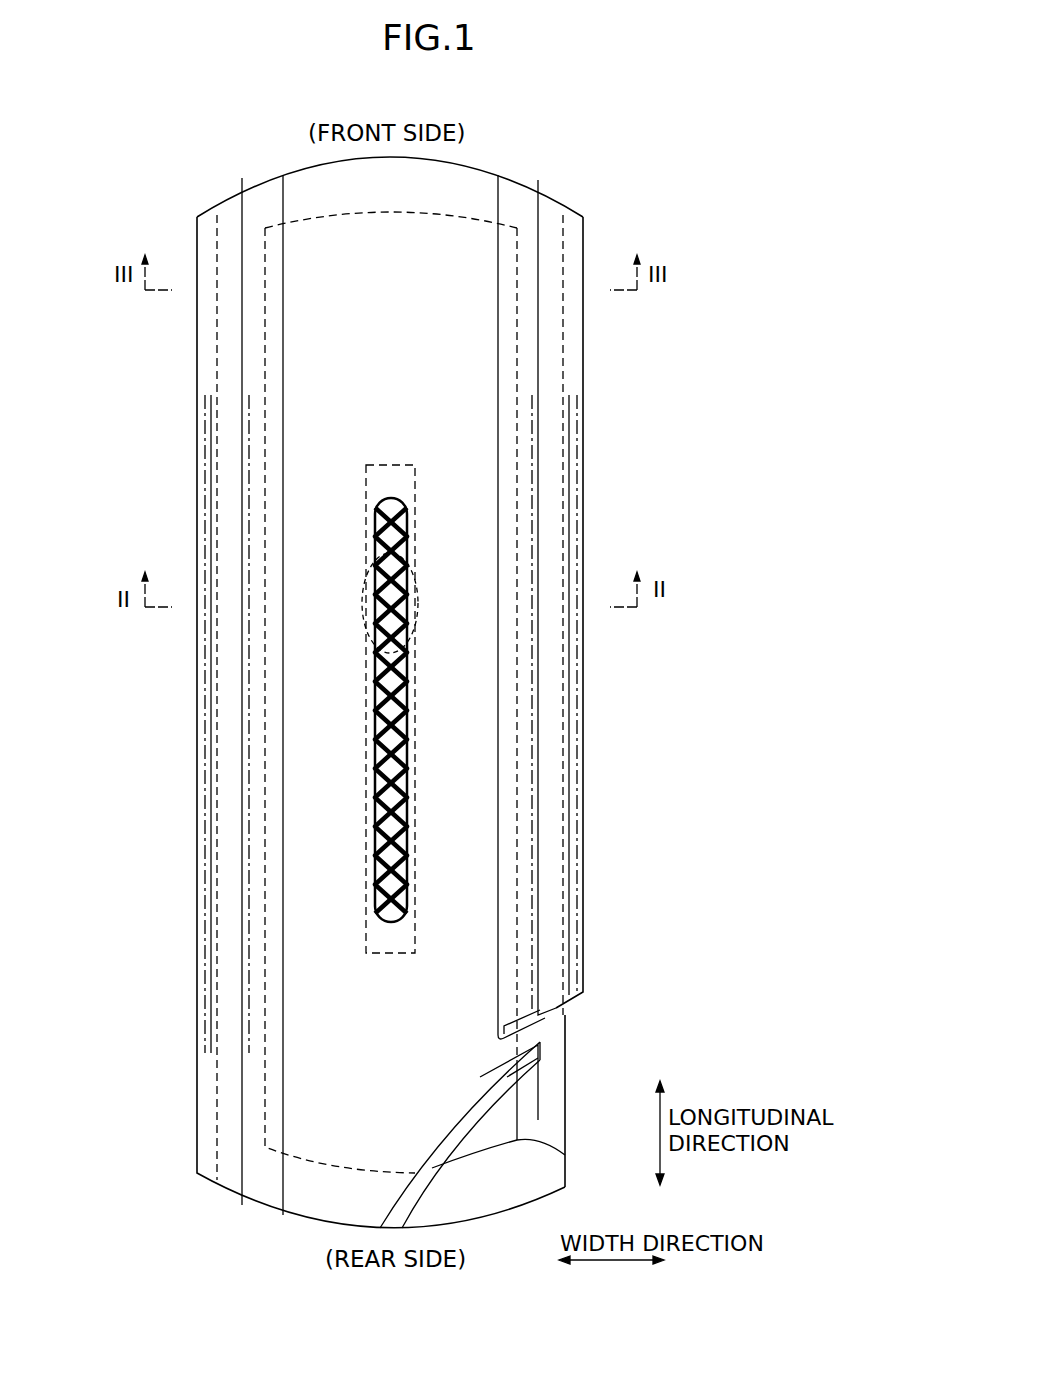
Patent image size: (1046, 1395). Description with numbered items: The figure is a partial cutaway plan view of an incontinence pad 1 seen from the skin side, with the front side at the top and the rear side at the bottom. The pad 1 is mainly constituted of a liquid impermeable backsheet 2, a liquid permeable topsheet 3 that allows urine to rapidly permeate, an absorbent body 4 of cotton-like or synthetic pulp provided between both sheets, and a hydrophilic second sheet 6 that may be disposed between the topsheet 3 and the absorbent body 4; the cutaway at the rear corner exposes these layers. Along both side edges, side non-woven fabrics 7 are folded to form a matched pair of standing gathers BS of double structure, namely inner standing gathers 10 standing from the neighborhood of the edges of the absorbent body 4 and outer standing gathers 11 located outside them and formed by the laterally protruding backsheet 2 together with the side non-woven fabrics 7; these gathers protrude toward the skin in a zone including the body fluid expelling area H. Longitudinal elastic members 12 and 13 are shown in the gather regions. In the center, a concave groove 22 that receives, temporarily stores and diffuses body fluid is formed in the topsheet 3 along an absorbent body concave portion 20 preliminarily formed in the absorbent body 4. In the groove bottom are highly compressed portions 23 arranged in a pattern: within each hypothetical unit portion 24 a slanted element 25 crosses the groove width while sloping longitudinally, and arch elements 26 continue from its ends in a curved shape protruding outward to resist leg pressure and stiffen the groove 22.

The incontinence pad 1 is at (605, 195).
The liquid impermeable backsheet 2 is at (538, 1120).
The liquid permeable topsheet 3 is at (387, 1157).
The absorbent body 4 is at (498, 1132).
The hydrophilic second sheet 6 is at (432, 1168).
The side non-woven fabric 7 is at (210, 1140).
The inner standing gather 10 is at (246, 518).
The outer standing gather 11 is at (197, 522).
The elastic member 12 is at (245, 690).
The elastic member 13 is at (211, 690).
The absorbent body concave portion 20 is at (418, 670).
The concave groove 22 is at (378, 918).
The highly compressed portion 23 is at (405, 540).
The hypothetical unit portion 24 is at (398, 789).
The slanted element 25 is at (387, 512).
The arch element 26 is at (376, 766).
The body fluid expelling area H is at (418, 590).
The standing gather BS is at (186, 495).